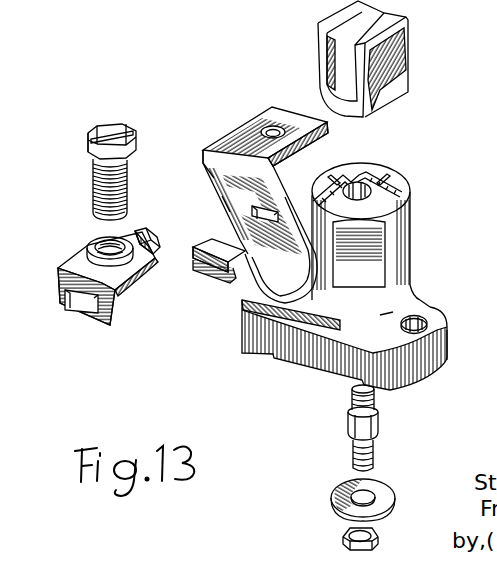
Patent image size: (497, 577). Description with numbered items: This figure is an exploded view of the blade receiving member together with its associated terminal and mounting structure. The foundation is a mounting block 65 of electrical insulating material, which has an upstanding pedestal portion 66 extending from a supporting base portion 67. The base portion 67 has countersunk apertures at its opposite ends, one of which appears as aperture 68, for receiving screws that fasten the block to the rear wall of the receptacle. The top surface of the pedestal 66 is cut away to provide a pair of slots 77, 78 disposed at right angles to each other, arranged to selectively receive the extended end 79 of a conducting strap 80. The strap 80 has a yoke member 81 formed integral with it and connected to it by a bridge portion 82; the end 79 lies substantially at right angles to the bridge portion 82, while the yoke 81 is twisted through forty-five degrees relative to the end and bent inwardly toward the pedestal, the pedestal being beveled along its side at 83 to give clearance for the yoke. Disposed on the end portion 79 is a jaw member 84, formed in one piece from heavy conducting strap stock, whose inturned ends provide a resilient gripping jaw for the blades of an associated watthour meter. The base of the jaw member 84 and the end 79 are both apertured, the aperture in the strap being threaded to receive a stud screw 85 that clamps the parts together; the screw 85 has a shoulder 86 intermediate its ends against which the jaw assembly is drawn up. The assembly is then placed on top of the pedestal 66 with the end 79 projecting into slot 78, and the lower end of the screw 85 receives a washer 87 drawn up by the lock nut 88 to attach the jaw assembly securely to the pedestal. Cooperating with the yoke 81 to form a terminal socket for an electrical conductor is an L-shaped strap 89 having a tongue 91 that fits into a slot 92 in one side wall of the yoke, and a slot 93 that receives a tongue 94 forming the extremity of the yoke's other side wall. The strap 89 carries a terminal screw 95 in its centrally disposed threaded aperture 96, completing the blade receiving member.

The mounting block 65 is at (366, 268).
The pedestal portion 66 is at (397, 218).
The base portion 67 is at (448, 344).
The countersunk aperture 68 is at (421, 317).
The slot 77 is at (338, 176).
The slot 78 is at (382, 178).
The extended end 79 is at (282, 116).
The conducting strap 80 is at (252, 210).
The yoke member 81 is at (253, 221).
The bridge portion 82 is at (202, 157).
The bevel 83 is at (372, 260).
The jaw member 84 is at (397, 52).
The stud screw 85 is at (374, 448).
The shoulder 86 is at (377, 418).
The washer 87 is at (397, 498).
The lock nut 88 is at (380, 537).
The L-shaped strap 89 is at (105, 307).
The tongue 91 is at (158, 250).
The slot 92 is at (225, 199).
The slot 93 is at (101, 273).
The tongue 94 is at (233, 272).
The terminal screw 95 is at (93, 176).
The threaded aperture 96 is at (96, 238).